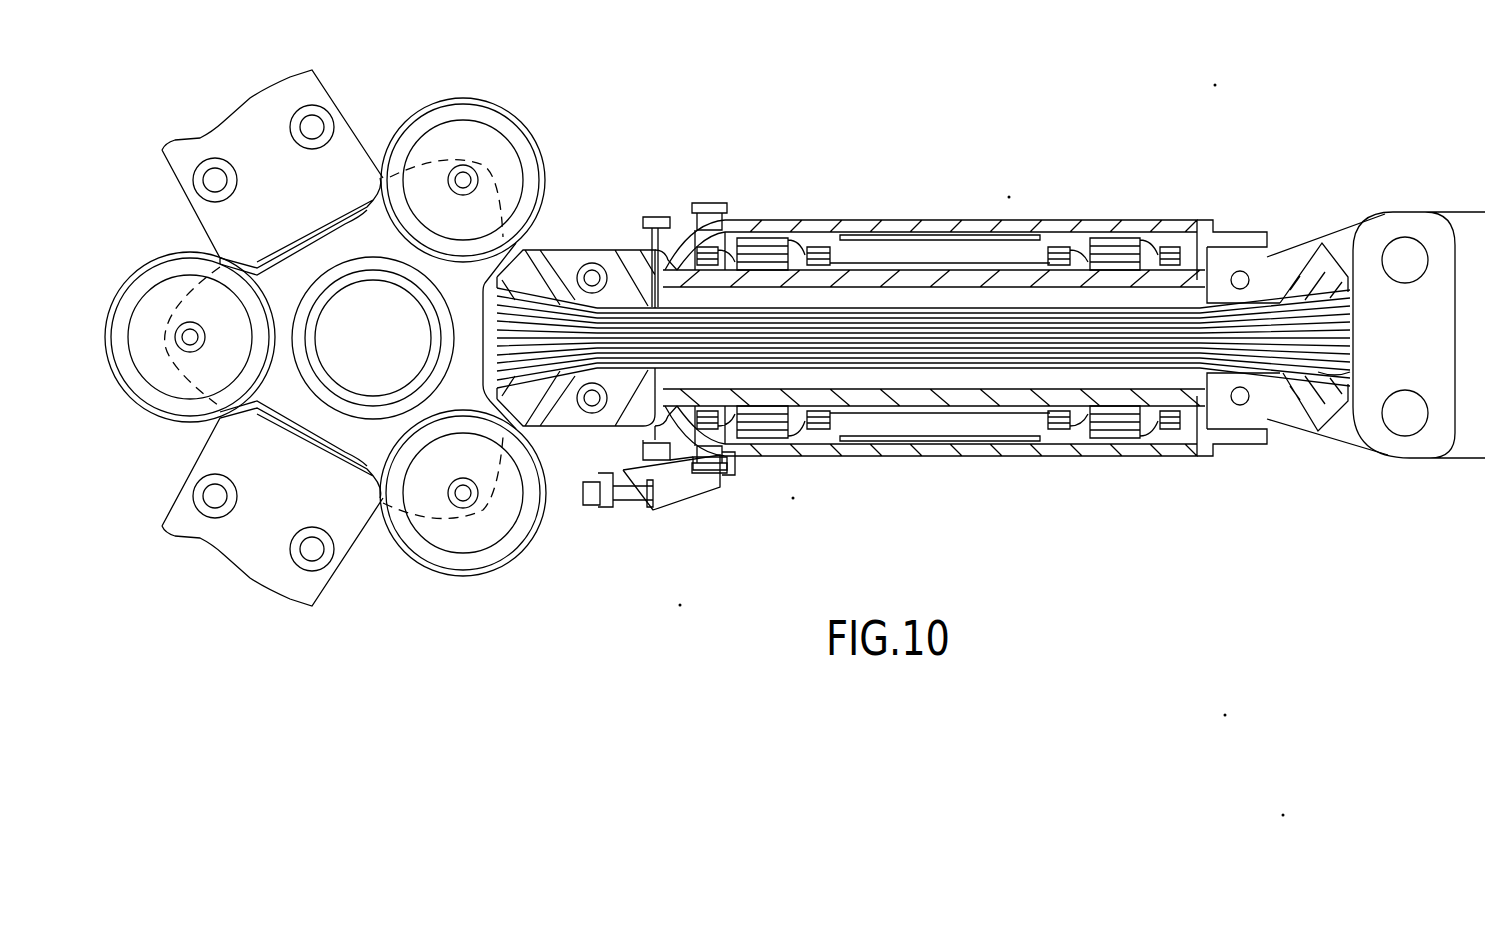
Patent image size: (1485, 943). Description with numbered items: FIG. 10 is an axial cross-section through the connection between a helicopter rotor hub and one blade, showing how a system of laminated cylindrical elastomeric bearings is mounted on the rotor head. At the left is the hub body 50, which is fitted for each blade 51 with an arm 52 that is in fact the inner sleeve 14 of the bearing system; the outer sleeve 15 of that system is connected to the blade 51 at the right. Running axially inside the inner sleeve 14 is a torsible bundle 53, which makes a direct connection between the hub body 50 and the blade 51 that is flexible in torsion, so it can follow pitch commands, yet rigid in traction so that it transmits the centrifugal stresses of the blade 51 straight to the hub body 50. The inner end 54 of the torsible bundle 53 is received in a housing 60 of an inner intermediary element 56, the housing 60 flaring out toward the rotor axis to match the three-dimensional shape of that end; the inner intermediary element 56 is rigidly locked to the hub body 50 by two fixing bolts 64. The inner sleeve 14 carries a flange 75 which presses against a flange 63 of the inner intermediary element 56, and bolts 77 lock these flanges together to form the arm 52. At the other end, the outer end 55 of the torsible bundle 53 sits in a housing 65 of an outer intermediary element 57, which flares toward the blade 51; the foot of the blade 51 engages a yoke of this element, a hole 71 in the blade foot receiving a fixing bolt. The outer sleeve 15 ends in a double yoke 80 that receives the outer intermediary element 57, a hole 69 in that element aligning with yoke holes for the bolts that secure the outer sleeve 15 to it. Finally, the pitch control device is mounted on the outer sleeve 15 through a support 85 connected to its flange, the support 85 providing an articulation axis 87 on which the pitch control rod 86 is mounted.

The inner sleeve 14 is at (920, 268).
The outer sleeve 15 is at (860, 221).
The hub body 50 is at (377, 320).
The blade 51 is at (1458, 240).
The arm 52 is at (695, 240).
The torsible bundle 53 is at (993, 302).
The inner end 54 is at (596, 263).
The outer end 55 is at (1320, 313).
The inner intermediary element 56 is at (576, 428).
The outer intermediary element 57 is at (1283, 420).
The housing 60 is at (560, 330).
The flange 63 is at (651, 216).
The fixing bolts 64 is at (625, 252).
The housing 65 is at (1345, 370).
The hole 69 is at (1246, 272).
The hole 71 is at (1392, 252).
The flange 75 is at (712, 470).
The bolts 77 is at (640, 445).
The double yoke 80 is at (1230, 240).
The support 85 is at (680, 493).
The pitch control rod 86 is at (606, 508).
The articulation axis 87 is at (632, 498).